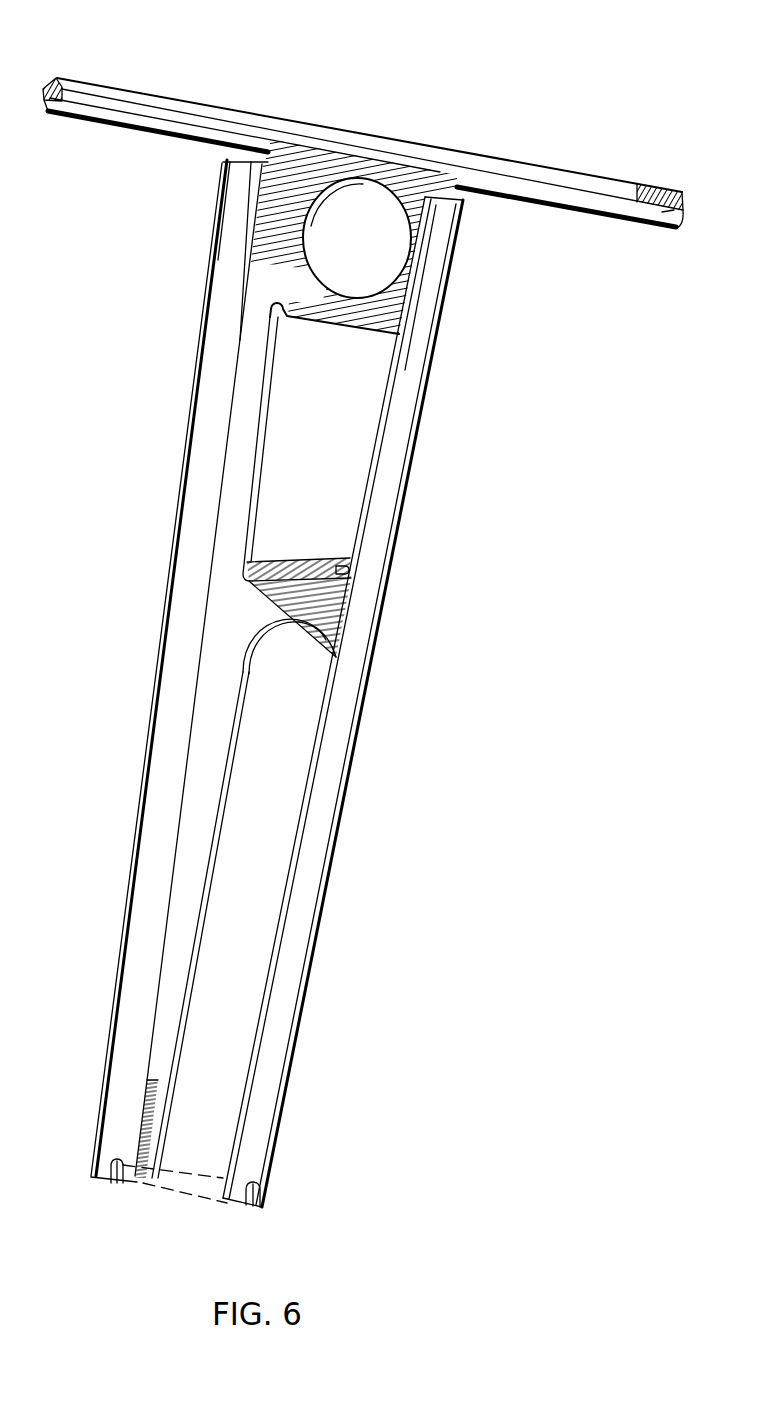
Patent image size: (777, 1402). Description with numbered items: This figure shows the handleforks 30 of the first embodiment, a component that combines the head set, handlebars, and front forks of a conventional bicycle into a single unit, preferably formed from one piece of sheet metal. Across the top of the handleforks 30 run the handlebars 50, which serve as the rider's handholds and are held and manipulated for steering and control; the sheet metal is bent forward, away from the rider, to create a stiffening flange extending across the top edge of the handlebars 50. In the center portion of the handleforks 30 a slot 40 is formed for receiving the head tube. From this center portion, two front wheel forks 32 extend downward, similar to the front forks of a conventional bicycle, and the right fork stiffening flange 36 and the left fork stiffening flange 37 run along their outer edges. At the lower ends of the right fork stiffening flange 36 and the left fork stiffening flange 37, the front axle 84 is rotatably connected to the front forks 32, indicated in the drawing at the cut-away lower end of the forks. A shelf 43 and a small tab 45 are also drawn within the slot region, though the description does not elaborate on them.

The handleforks 30 is at (483, 590).
The front wheel forks 32 is at (283, 893).
The right fork stiffening flange 36 is at (153, 710).
The left fork stiffening flange 37 is at (359, 716).
The slot 40 is at (362, 399).
The shelf 43 is at (307, 561).
The tab 45 is at (346, 562).
The handlebars 50 is at (359, 131).
The front axle 84 is at (203, 1200).